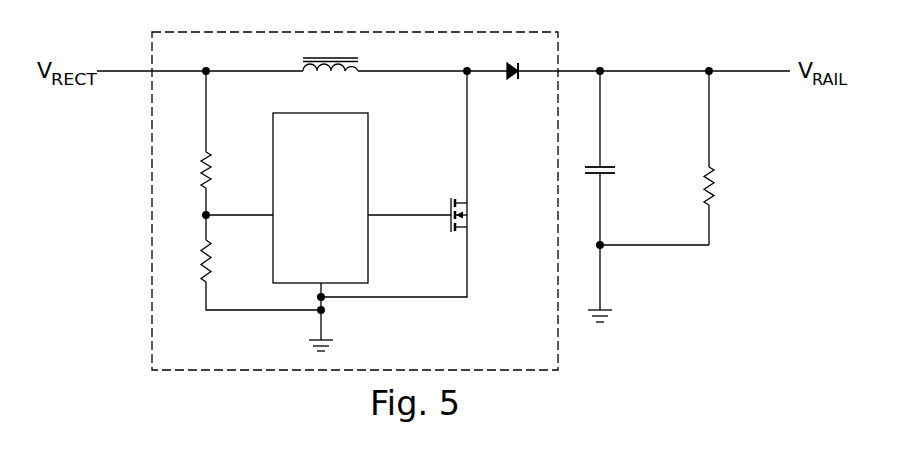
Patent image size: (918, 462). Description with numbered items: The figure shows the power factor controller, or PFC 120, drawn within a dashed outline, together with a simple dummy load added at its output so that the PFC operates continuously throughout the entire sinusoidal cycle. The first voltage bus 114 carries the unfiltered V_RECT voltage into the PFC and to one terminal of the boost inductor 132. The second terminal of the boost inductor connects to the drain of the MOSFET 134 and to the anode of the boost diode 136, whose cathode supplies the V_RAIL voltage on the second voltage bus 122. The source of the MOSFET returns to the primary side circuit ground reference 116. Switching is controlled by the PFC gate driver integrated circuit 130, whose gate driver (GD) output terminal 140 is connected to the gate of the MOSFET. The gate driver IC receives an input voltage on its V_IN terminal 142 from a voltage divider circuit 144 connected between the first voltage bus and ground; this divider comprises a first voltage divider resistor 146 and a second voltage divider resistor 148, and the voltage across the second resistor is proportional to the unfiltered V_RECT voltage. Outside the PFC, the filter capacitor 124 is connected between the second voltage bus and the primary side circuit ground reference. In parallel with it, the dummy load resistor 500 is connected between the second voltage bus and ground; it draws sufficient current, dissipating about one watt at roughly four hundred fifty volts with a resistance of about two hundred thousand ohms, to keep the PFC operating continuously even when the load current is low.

The first voltage bus 114 is at (143, 70).
The primary side circuit ground reference 116 is at (318, 340).
The PFC 120 is at (355, 32).
The second voltage bus 122 is at (790, 71).
The filter capacitor 124 is at (601, 174).
The PFC gate driver integrated circuit 130 is at (320, 113).
The boost inductor 132 is at (315, 73).
The MOSFET 134 is at (467, 222).
The boost diode 136 is at (507, 67).
The gate driver output terminal 140 is at (368, 217).
The V_IN terminal 142 is at (273, 227).
The voltage divider circuit 144 is at (225, 152).
The first voltage divider resistor 146 is at (203, 180).
The second voltage divider resistor 148 is at (203, 274).
The dummy load resistor 500 is at (703, 192).